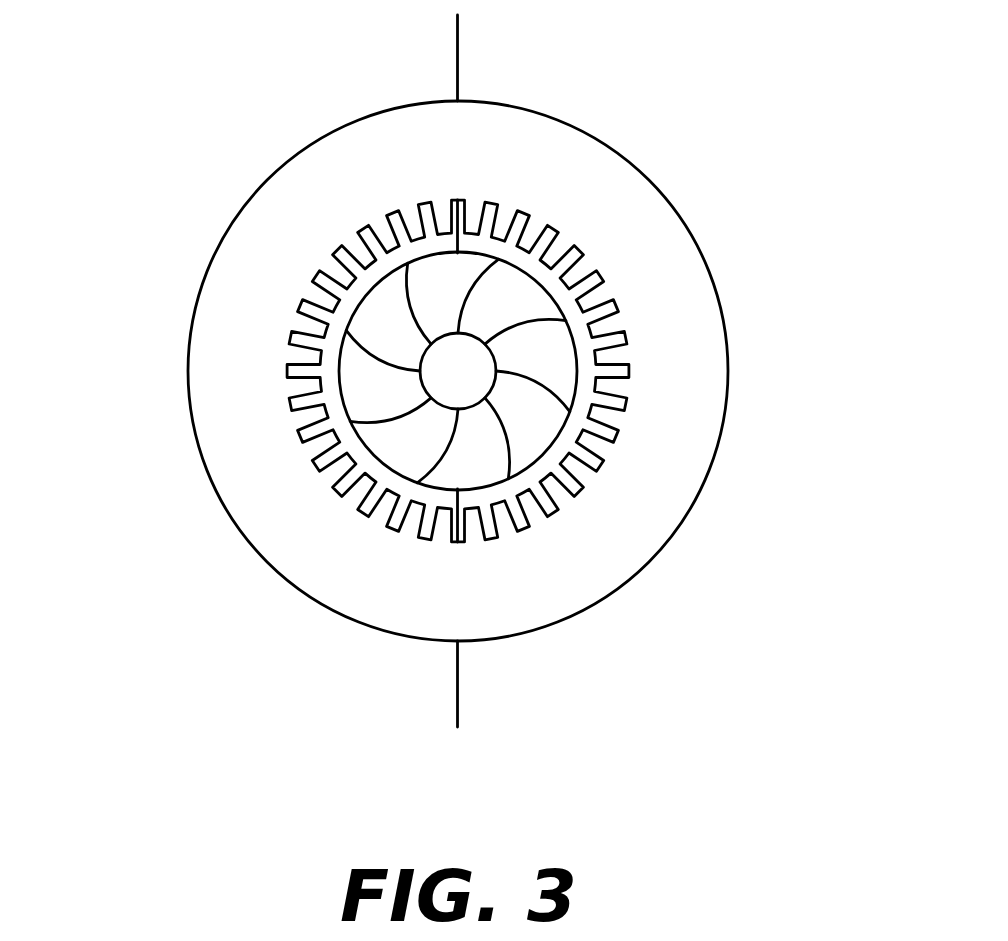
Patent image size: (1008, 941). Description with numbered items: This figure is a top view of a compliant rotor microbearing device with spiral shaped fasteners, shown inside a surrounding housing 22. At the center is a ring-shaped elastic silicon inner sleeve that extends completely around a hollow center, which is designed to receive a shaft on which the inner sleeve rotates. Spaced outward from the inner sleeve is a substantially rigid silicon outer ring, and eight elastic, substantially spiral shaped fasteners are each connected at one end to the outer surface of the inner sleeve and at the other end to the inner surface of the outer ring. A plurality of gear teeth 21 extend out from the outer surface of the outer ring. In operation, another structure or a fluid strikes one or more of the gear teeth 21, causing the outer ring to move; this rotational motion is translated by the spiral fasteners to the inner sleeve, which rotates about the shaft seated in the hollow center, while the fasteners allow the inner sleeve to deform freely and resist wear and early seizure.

The gear teeth 21 is at (596, 240).
The housing 22 is at (697, 503).